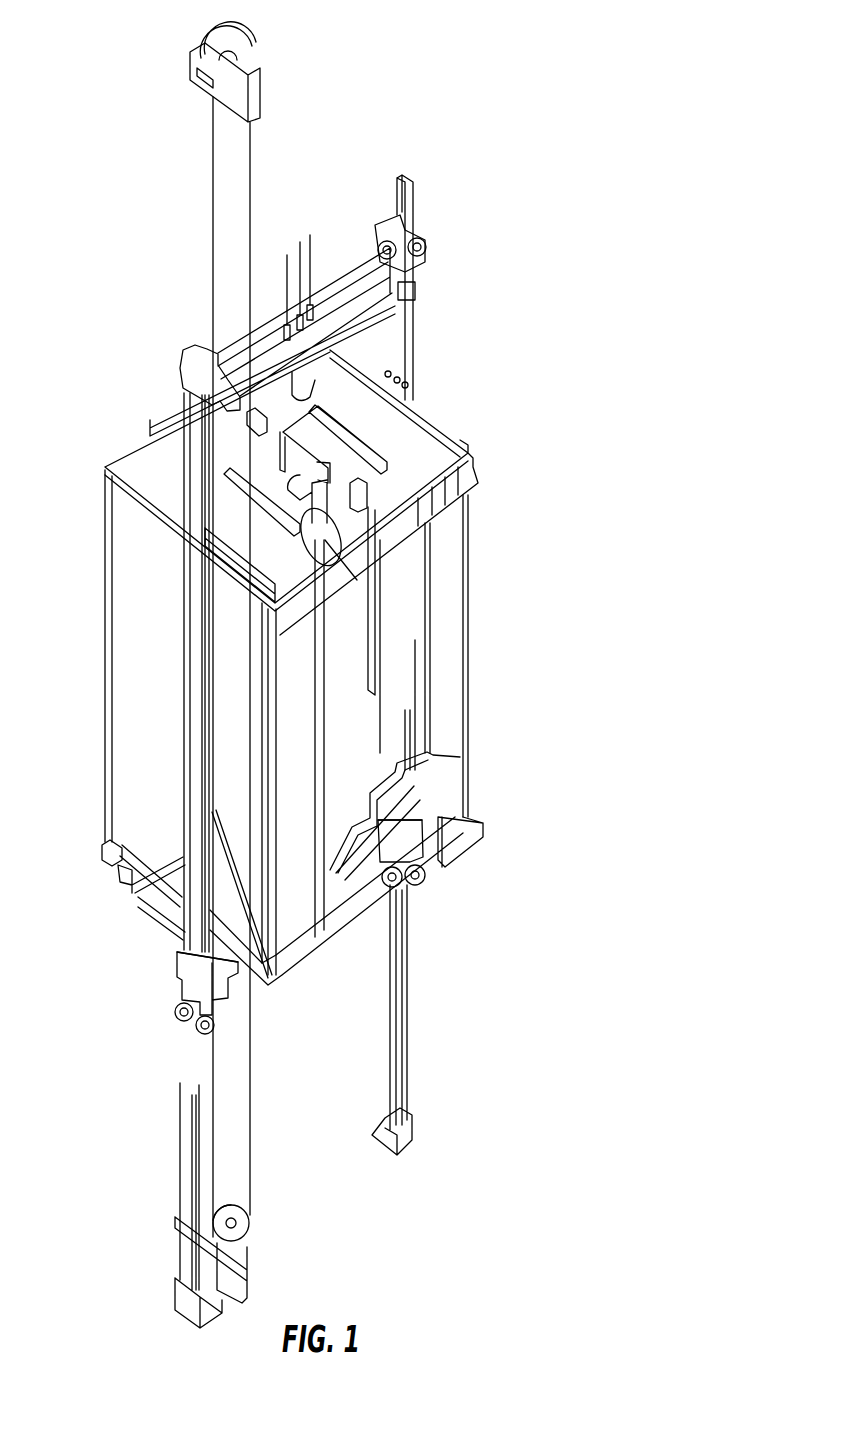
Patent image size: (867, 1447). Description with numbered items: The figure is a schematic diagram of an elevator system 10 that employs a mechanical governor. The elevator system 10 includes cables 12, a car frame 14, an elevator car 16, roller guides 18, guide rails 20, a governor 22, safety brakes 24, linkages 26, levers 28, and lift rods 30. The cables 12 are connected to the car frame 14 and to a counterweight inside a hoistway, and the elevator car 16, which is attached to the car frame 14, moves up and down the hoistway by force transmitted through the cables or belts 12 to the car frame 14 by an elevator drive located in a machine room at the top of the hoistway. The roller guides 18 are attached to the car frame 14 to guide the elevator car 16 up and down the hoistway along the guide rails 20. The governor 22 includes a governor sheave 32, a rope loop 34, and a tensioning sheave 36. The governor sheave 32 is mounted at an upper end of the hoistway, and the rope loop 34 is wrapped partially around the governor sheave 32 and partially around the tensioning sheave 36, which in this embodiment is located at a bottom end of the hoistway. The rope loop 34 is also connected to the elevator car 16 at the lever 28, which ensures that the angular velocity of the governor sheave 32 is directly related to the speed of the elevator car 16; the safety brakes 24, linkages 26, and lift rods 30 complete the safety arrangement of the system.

The elevator system 10 is at (494, 108).
The cables 12 is at (310, 262).
The car frame 14 is at (415, 352).
The elevator car 16 is at (455, 598).
The roller guides 18 is at (400, 228).
The guide rails 20 is at (407, 1080).
The governor 22 is at (262, 90).
The safety brakes 24 is at (377, 852).
The linkages 26 is at (405, 386).
The levers 28 is at (414, 288).
The lift rods 30 is at (190, 665).
The governor sheave 32 is at (258, 50).
The rope loop 34 is at (212, 236).
The tensioning sheave 36 is at (250, 1228).